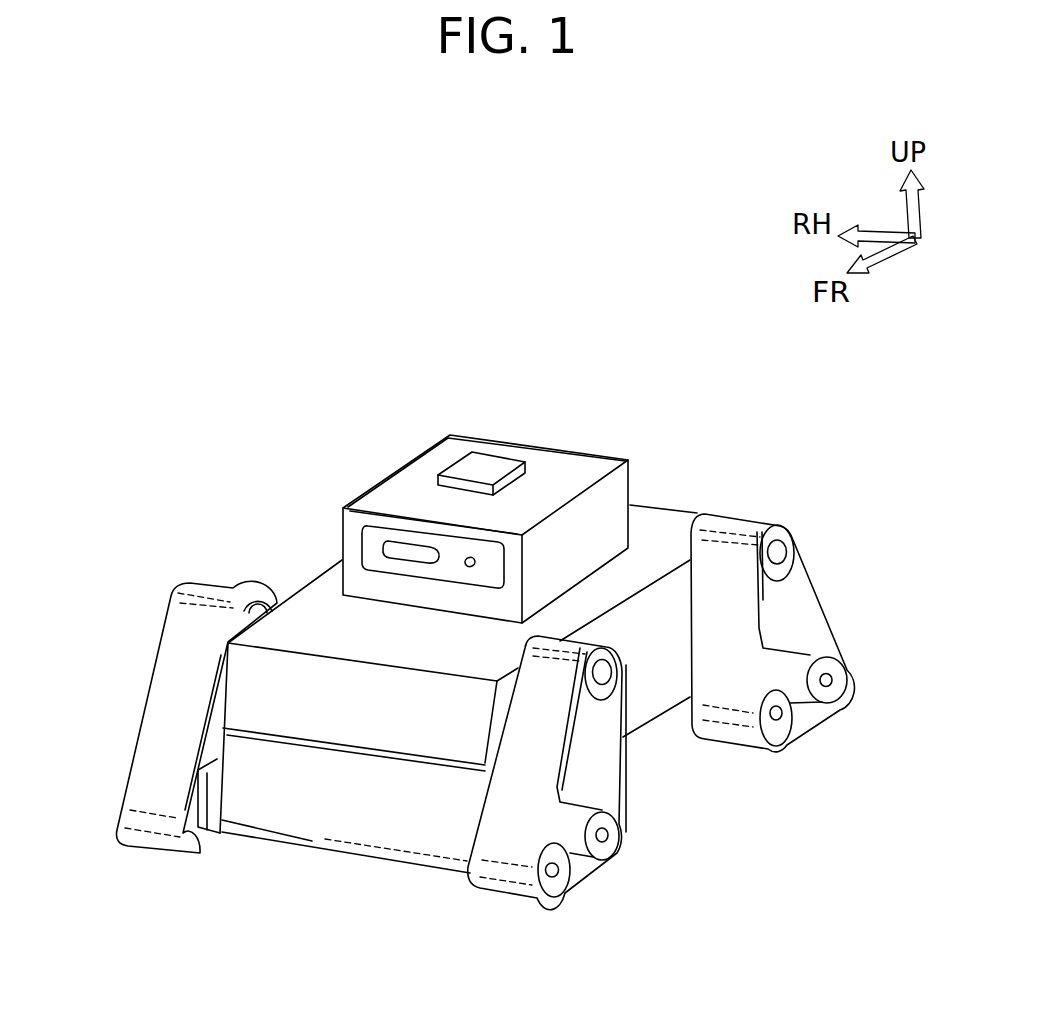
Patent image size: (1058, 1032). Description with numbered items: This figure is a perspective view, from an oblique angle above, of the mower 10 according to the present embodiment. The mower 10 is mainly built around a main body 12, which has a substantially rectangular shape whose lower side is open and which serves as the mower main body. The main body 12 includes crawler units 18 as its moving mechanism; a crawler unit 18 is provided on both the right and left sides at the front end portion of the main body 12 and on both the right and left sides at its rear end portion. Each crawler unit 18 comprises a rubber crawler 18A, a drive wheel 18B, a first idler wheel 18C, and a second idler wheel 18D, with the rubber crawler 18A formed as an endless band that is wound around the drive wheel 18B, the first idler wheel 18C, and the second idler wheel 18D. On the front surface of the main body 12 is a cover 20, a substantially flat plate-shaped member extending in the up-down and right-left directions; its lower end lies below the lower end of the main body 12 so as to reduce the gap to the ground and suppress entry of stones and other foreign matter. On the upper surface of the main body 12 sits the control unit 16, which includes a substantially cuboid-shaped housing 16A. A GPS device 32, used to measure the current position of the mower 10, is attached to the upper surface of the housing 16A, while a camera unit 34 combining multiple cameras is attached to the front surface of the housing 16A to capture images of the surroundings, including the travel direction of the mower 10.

The mower 10 is at (321, 320).
The main body 12 is at (312, 571).
The control unit 16 is at (580, 444).
The housing 16A is at (414, 457).
The crawler unit 18 is at (150, 856).
The rubber crawler 18A is at (127, 771).
The drive wheel 18B is at (777, 526).
The first idler wheel 18C is at (556, 897).
The second idler wheel 18D is at (613, 848).
The cover 20 is at (340, 818).
The GPS device 32 is at (494, 458).
The camera unit 34 is at (401, 526).